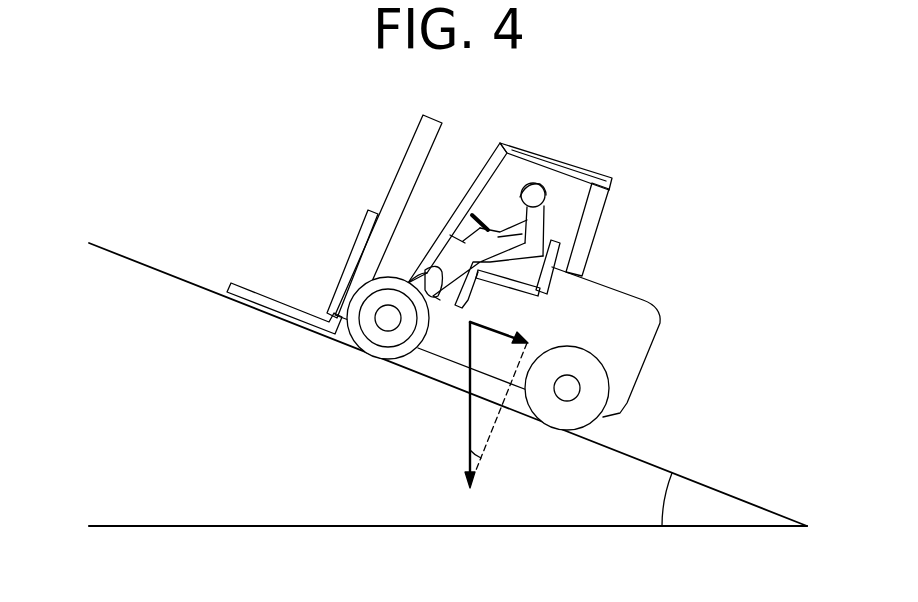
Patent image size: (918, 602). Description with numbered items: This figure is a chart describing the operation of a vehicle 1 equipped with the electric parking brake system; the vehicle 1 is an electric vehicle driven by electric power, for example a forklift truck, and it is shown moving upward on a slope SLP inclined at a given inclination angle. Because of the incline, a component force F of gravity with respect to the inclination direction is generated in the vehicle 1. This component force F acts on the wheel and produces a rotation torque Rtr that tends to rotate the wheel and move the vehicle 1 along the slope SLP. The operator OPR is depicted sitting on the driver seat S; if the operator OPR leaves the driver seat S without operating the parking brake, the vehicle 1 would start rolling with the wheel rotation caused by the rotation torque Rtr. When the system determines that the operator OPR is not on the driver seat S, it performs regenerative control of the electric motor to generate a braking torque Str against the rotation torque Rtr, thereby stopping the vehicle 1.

The vehicle 1 is at (493, 269).
The operator OPR is at (535, 182).
The driver seat S is at (555, 243).
The component force F is at (503, 333).
The braking torque Str is at (353, 346).
The rotation torque Rtr is at (420, 350).
The slope SLP is at (713, 487).